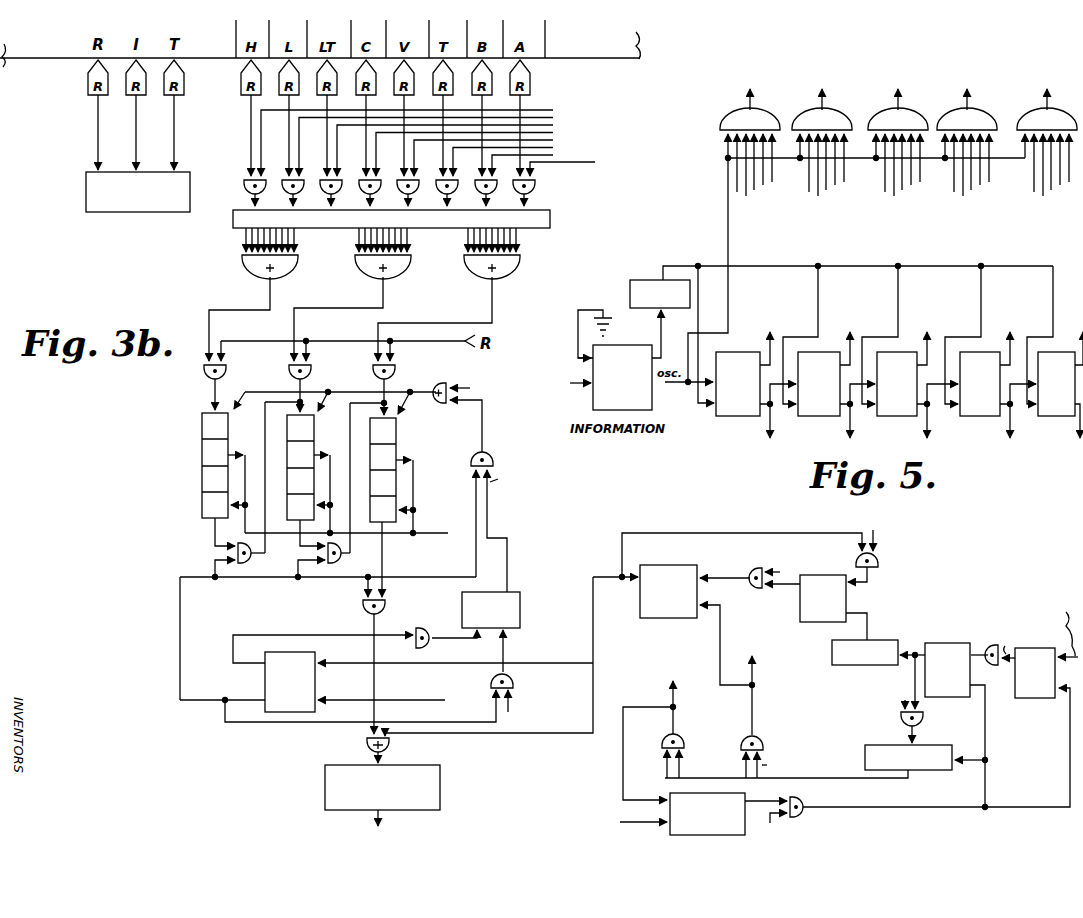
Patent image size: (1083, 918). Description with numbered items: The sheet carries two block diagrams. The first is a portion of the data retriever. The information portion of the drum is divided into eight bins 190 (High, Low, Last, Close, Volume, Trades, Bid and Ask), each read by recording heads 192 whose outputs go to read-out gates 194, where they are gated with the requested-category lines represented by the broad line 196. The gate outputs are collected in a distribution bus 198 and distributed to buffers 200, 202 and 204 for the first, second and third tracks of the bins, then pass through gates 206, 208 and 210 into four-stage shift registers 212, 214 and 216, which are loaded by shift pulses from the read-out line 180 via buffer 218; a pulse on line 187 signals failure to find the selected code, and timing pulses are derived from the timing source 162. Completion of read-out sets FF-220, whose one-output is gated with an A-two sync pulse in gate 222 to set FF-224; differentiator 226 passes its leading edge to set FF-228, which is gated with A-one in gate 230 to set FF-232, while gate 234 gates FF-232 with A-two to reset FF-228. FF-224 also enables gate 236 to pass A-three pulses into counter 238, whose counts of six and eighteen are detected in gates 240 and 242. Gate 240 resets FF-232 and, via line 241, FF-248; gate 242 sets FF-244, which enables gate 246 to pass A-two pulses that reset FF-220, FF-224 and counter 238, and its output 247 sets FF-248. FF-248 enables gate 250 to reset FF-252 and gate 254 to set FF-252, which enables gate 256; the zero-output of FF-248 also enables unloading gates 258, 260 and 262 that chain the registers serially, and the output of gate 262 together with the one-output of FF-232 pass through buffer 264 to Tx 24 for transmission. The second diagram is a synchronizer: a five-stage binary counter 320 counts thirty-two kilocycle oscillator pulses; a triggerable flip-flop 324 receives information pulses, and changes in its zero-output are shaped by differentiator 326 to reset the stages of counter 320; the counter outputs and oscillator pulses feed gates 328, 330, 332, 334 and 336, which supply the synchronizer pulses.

In FIG. 3B, the Tx 24 is at (325, 781).
In FIG. 3B, the timing source 162 is at (118, 213).
In FIG. 3B, the read-out line 180 is at (478, 392).
In FIG. 3B, the line 187 is at (448, 533).
In FIG. 3B, the bins 190 is at (265, 34).
In FIG. 3B, the recording heads 192 is at (241, 95).
In FIG. 3B, the read-out gates 194 is at (244, 186).
In FIG. 3B, the broad line 196 is at (560, 160).
In FIG. 3B, the distribution bus 198 is at (235, 223).
In FIG. 3B, the buffer 200 is at (280, 272).
In FIG. 3B, the buffer 202 is at (393, 272).
In FIG. 3B, the buffer 204 is at (502, 272).
In FIG. 3B, the gate 206 is at (226, 374).
In FIG. 3B, the gate 208 is at (311, 374).
In FIG. 3B, the gate 210 is at (395, 374).
In FIG. 3B, the 4-stage shift register 212 is at (234, 426).
In FIG. 3B, the 4-stage shift register 214 is at (320, 437).
In FIG. 3B, the 4-stage shift register 216 is at (396, 446).
In FIG. 3B, the buffer 218 is at (446, 406).
In FIG. 3B, the FF- 220 is at (1008, 634).
In FIG. 3B, the gate 222 is at (1015, 700).
In FIG. 3B, the FF- 224 is at (930, 641).
In FIG. 3B, the differentiator 226 is at (832, 652).
In FIG. 3B, the FF- 228 is at (800, 607).
In FIG. 3B, the gate 230 is at (748, 560).
In FIG. 3B, the FF- 232 is at (687, 565).
In FIG. 3B, the gate 234 is at (880, 563).
In FIG. 3B, the gate 236 is at (923, 718).
In FIG. 3B, the counter 238 is at (865, 745).
In FIG. 3B, the gate 240 is at (770, 736).
In FIG. 3B, the line 241 is at (415, 700).
In FIG. 3B, the gate 242 is at (690, 736).
In FIG. 3B, the FF- 244 is at (668, 796).
In FIG. 3B, the gate 246 is at (804, 798).
In FIG. 3B, the output 247 is at (474, 672).
In FIG. 3B, the FF- 248 is at (265, 682).
In FIG. 3B, the gate 250 is at (430, 648).
In FIG. 3B, the FF- 252 is at (521, 594).
In FIG. 3B, the gate 254 is at (513, 682).
In FIG. 3B, the gate 256 is at (494, 458).
In FIG. 3B, the unloading gate 258 is at (252, 562).
In FIG. 3B, the unloading gate 260 is at (342, 562).
In FIG. 3B, the unloading gate 262 is at (385, 608).
In FIG. 3B, the buffer 264 is at (368, 742).
In FIG. 5, the 5-stage binary counter 320 is at (815, 423).
In FIG. 5, the triggerable flip-flop 324 is at (650, 335).
In FIG. 5, the differentiator 326 is at (660, 280).
In FIG. 5, the gate 328 is at (728, 112).
In FIG. 5, the gate 330 is at (800, 112).
In FIG. 5, the gate 332 is at (876, 112).
In FIG. 5, the gate 334 is at (945, 112).
In FIG. 5, the gate 336 is at (1025, 112).